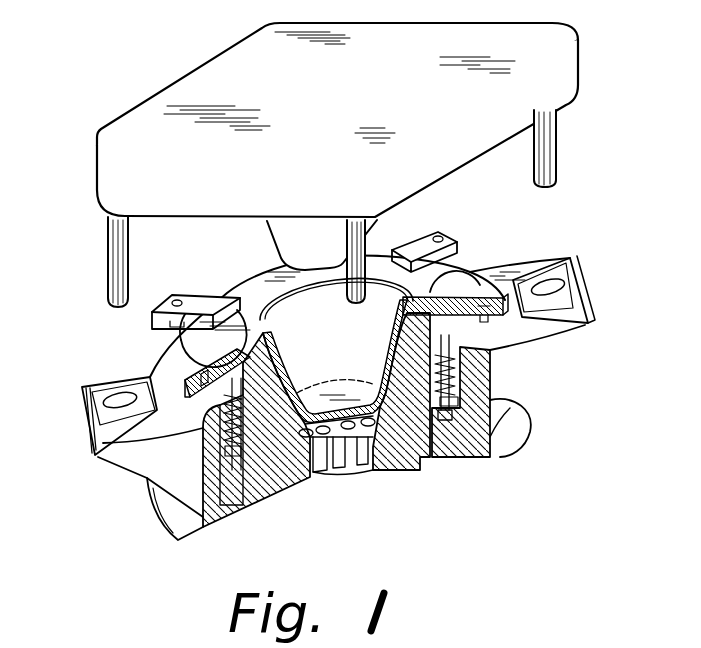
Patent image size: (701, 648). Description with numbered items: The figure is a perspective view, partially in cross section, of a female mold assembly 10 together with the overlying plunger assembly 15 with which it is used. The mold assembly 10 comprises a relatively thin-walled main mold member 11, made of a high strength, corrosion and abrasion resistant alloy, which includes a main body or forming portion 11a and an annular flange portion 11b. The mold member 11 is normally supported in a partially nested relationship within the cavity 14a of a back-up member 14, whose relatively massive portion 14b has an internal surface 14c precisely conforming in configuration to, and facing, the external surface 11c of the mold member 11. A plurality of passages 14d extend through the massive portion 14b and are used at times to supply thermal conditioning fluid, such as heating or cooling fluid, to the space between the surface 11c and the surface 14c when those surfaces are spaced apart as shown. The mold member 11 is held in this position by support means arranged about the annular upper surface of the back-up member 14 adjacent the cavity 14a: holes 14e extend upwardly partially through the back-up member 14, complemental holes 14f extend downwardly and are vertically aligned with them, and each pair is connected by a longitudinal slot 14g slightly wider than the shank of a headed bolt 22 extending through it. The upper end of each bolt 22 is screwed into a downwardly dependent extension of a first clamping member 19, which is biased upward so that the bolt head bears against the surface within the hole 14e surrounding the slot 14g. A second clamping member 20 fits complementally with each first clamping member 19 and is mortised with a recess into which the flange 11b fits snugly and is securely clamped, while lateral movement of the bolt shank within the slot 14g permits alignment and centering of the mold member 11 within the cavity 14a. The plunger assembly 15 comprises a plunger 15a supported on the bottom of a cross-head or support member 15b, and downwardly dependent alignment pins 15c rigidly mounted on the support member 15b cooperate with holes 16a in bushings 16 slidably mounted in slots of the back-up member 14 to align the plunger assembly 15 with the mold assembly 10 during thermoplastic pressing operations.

The mold assembly 10 is at (407, 476).
The mold member 11 is at (357, 354).
The forming portion 11a is at (335, 388).
The annular flange portion 11b is at (462, 260).
The external surface 11c is at (300, 392).
The back-up member 14 is at (420, 442).
The cavity 14a is at (370, 437).
The massive portion 14b is at (272, 484).
The internal surface 14c is at (287, 400).
The passages 14d is at (320, 478).
The holes 14e is at (460, 458).
The complemental holes 14f is at (463, 368).
The longitudinal slot 14g is at (460, 401).
The plunger assembly 15 is at (582, 78).
The plunger 15a is at (338, 261).
The support member 15b is at (342, 117).
The alignment pins 15c is at (548, 161).
The bushings 16 is at (578, 282).
The holes 16a is at (562, 283).
The first clamping member 19 is at (456, 297).
The second clamping member 20 is at (407, 300).
The headed bolt 22 is at (447, 422).